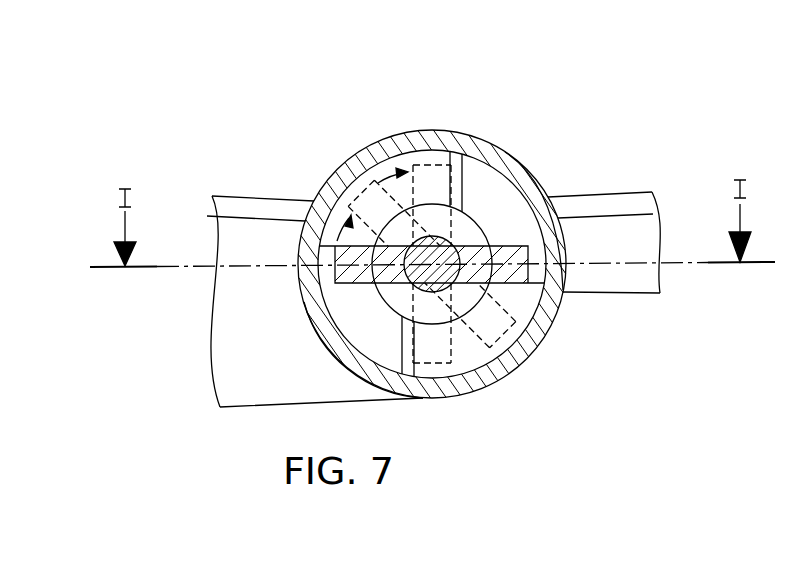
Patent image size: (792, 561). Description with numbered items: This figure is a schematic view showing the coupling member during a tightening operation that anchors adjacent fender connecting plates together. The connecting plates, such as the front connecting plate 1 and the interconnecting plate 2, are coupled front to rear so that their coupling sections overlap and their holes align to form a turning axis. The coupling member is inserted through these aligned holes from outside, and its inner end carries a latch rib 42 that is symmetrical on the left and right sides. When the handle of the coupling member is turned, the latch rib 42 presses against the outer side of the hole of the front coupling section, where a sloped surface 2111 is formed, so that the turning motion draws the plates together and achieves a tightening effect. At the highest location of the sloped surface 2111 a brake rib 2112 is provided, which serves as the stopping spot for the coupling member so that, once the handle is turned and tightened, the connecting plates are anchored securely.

The front connecting plate 1 is at (615, 197).
The interconnecting plate 2 is at (233, 207).
The latch rib 42 is at (510, 275).
The sloped surface 2111 is at (513, 223).
The brake rib 2112 is at (457, 177).